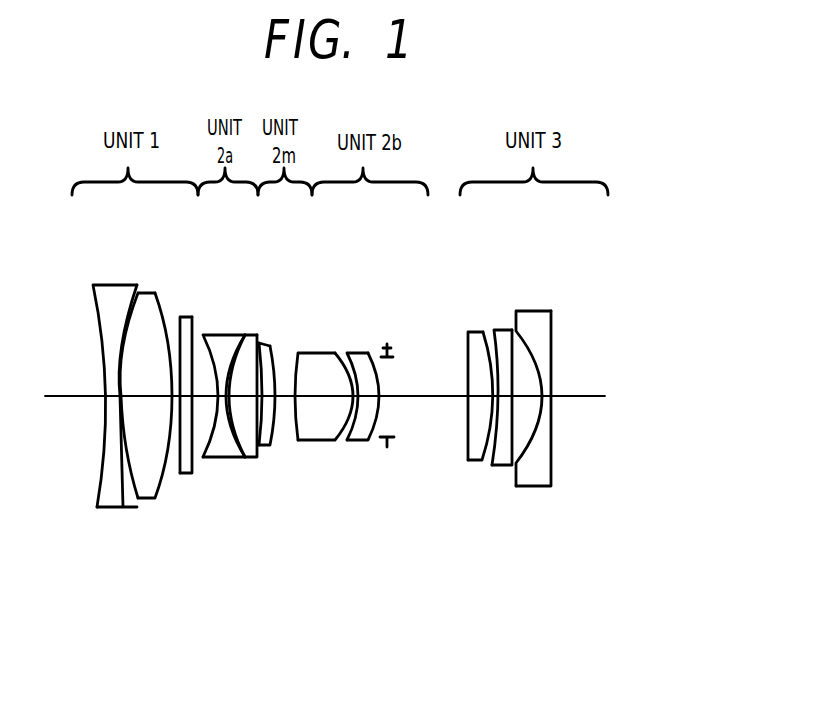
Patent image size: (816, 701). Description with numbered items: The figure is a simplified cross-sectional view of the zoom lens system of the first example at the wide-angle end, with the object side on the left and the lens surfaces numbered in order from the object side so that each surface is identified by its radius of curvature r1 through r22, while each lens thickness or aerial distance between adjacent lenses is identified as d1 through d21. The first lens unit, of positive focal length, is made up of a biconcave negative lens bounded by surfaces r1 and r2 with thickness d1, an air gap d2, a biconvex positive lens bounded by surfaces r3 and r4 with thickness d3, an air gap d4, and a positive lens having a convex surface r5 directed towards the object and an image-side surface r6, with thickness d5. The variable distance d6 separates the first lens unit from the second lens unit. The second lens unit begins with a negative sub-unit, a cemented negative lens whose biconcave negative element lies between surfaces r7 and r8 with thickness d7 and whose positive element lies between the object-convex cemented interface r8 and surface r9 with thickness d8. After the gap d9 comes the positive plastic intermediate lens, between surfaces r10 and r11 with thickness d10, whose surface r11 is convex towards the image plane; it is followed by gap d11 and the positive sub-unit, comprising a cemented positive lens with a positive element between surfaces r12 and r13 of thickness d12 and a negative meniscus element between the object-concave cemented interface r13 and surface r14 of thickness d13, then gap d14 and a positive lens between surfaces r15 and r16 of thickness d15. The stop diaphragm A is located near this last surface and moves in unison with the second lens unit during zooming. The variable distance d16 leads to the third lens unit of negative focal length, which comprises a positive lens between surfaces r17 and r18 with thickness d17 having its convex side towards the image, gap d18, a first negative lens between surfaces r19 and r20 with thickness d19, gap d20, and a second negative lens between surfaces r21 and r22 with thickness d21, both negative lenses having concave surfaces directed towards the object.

The radius of curvature of the first lens surface r1 is at (94, 285).
The radius of curvature of the second lens surface r2 is at (137, 285).
The radius of curvature of the third lens surface r3 is at (137, 293).
The radius of curvature of the fourth lens surface r4 is at (155, 293).
The radius of curvature of the fifth lens surface r5 is at (180, 317).
The radius of curvature of the sixth lens surface r6 is at (188, 317).
The radius of curvature of the seventh lens surface r7 is at (203, 335).
The radius of curvature of the eighth lens surface r8 is at (245, 335).
The radius of curvature of the ninth lens surface r9 is at (244, 335).
The radius of curvature of the tenth lens surface r10 is at (258, 343).
The radius of curvature of the eleventh lens surface r11 is at (271, 345).
The radius of curvature of the twelfth lens surface r12 is at (298, 352).
The radius of curvature of the thirteenth lens surface r13 is at (336, 353).
The radius of curvature of the fourteenth lens surface r14 is at (353, 353).
The radius of curvature of the fifteenth lens surface r15 is at (368, 353).
The radius of curvature of the sixteenth lens surface r16 is at (388, 343).
The radius of curvature of the seventeenth lens surface r17 is at (467, 332).
The radius of curvature of the eighteenth lens surface r18 is at (482, 332).
The radius of curvature of the nineteenth lens surface r19 is at (495, 330).
The radius of curvature of the twentieth lens surface r20 is at (511, 330).
The radius of curvature of the twenty-first lens surface r21 is at (517, 311).
The radius of curvature of the twenty-second lens surface r22 is at (551, 311).
The thickness of the first lens d1 is at (108, 400).
The aerial distance between the first and second lenses d2 is at (122, 400).
The thickness of the second lens d3 is at (148, 400).
The aerial distance between the second and third lenses d4 is at (176, 400).
The thickness of the third lens d5 is at (185, 400).
The aerial distance between the first and second lens units d6 is at (204, 400).
The thickness of the biconcave negative lens element d7 is at (222, 400).
The thickness of the positive lens element of sub-unit 2a d8 is at (227, 400).
The aerial distance between sub-unit 2a and lens 2m d9 is at (243, 400).
The thickness of lens 2m d10 is at (259, 400).
The aerial distance between lens 2m and sub-unit 2b d11 is at (268, 400).
The thickness of the positive lens element of sub-unit 2b d12 is at (285, 400).
The thickness of the negative meniscus lens element d13 is at (324, 400).
The aerial distance within sub-unit 2b d14 is at (355, 400).
The thickness of the last positive lens of sub-unit 2b d15 is at (368, 400).
The aerial distance between the second and third lens units d16 is at (428, 400).
The thickness of the third-unit positive lens d17 is at (480, 400).
The aerial distance between the third-unit positive lens and first negative lens d18 is at (495, 400).
The thickness of the first negative lens of the third unit d19 is at (505, 400).
The aerial distance between the two negative lenses of the third unit d20 is at (528, 400).
The thickness of the second negative lens of the third unit d21 is at (547, 400).
The stop diaphragm A is at (390, 348).